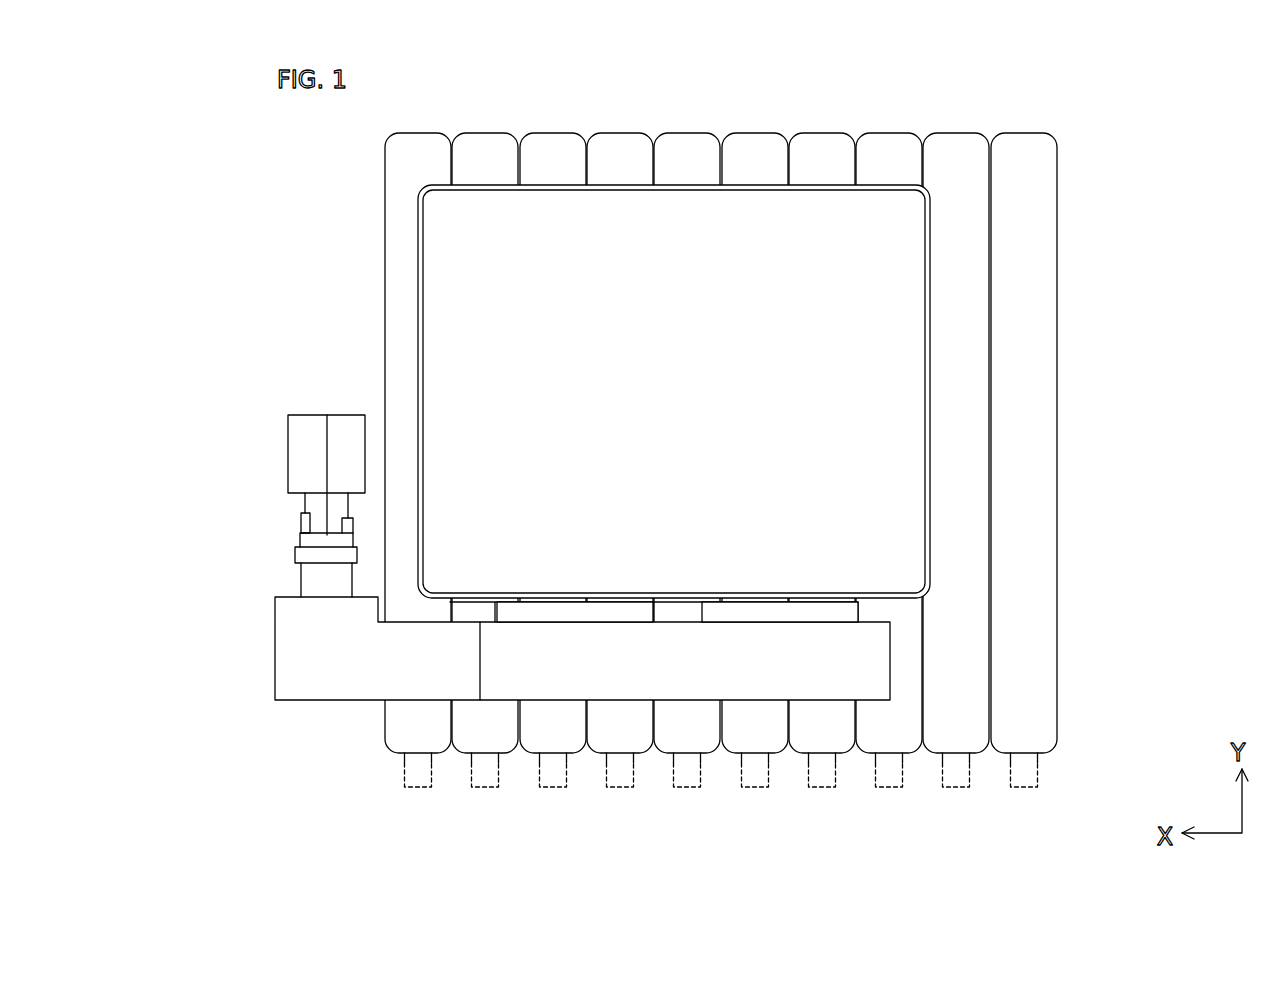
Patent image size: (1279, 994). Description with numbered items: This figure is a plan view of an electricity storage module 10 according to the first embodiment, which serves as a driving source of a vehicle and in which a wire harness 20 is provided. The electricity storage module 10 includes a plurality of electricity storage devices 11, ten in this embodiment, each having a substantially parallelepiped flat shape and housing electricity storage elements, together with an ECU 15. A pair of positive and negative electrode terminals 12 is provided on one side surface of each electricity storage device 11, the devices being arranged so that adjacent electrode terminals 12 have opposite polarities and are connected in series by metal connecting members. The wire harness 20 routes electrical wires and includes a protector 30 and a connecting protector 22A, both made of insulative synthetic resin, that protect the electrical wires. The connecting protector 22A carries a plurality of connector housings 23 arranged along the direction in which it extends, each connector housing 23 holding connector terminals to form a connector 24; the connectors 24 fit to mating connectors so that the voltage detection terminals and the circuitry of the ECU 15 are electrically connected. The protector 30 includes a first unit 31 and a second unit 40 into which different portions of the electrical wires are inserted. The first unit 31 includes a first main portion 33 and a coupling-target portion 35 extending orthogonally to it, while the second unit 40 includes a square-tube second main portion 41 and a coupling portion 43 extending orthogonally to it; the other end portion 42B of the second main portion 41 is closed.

The electricity storage module 10 is at (922, 92).
The electricity storage device 11 is at (422, 146).
The electrode terminal 12 is at (419, 790).
The ECU 15 is at (885, 410).
The wire harness 20 is at (668, 644).
The connecting protector 22A is at (875, 667).
The connector housing 23 is at (497, 604).
The connector 24 is at (535, 611).
The protector 30 is at (250, 502).
The first unit 31 is at (246, 561).
The first main portion 33 is at (297, 611).
The coupling-target portion 35 is at (311, 580).
The second unit 40 is at (263, 428).
The second main portion 41 is at (305, 447).
The other end portion 42B is at (304, 427).
The coupling portion 43 is at (316, 503).